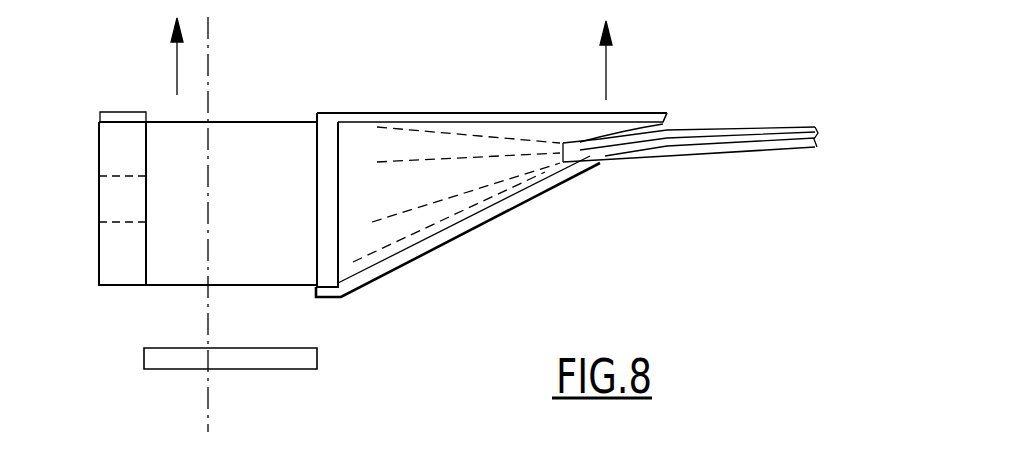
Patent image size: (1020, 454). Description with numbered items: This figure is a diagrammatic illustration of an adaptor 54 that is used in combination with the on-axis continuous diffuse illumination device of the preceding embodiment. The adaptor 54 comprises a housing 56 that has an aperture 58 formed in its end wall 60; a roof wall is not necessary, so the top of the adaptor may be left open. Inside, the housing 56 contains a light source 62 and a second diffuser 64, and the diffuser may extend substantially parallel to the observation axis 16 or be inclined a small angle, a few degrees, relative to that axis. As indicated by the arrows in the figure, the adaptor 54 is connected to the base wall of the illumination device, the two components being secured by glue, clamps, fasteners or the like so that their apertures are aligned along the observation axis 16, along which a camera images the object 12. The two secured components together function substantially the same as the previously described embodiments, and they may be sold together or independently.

The object 12 is at (311, 370).
The observation axis 16 is at (209, 63).
The adaptor 54 is at (648, 231).
The housing 56 is at (630, 107).
The aperture 58 is at (170, 295).
The end wall 60 is at (330, 298).
The light source 62 is at (650, 156).
The second diffuser 64 is at (318, 198).